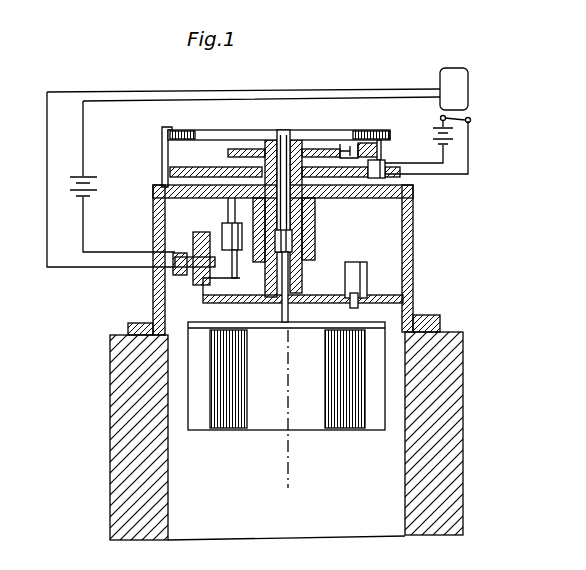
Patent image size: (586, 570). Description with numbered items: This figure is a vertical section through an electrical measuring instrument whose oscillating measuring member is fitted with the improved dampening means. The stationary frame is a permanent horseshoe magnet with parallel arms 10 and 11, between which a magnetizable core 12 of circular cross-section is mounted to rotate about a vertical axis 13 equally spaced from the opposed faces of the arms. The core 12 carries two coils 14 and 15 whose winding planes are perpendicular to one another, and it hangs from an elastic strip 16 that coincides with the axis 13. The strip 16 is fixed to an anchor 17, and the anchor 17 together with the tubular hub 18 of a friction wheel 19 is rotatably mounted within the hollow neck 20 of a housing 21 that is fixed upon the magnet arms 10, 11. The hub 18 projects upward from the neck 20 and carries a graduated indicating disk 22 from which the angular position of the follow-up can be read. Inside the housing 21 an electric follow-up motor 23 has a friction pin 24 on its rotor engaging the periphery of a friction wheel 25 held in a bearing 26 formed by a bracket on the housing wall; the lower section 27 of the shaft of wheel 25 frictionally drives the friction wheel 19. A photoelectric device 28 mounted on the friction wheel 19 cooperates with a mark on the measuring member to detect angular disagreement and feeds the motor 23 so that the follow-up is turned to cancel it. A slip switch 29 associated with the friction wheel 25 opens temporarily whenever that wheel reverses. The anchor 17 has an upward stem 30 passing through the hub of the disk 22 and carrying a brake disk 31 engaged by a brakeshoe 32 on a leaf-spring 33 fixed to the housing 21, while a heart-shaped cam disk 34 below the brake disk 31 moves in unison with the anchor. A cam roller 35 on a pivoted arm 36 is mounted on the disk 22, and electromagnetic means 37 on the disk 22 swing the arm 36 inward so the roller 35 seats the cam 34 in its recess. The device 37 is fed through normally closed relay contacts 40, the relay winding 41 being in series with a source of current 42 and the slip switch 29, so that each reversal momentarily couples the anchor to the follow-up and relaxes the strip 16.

The arm 10 is at (456, 398).
The arm 11 is at (115, 490).
The core 12 is at (279, 428).
The vertical axis 13 is at (288, 479).
The coil 14 is at (228, 428).
The coil 15 is at (344, 428).
The elastic strip 16 is at (284, 315).
The anchor 17 is at (292, 242).
The tubular hub 18 is at (302, 290).
The friction wheel 19 is at (243, 303).
The hollow neck 20 is at (313, 223).
The housing 21 is at (154, 311).
The indicating disk 22 is at (218, 174).
The electric follow-up motor 23 is at (227, 232).
The friction pin 24 is at (237, 268).
The friction wheel 25 is at (184, 273).
The bearing 26 is at (199, 233).
The lower section of shaft 27 is at (210, 286).
The photoelectric device 28 is at (365, 276).
The electrical slip switch 29 is at (181, 275).
The stem 30 is at (284, 137).
The brake disk 31 is at (215, 131).
The brakeshoe 32 is at (170, 131).
The leaf-spring 33 is at (162, 161).
The cam disk 34 is at (234, 150).
The cam roller 35 is at (342, 144).
The arm 36 is at (362, 143).
The electromagnetic means 37 is at (386, 167).
The normally closed contacts 40 is at (470, 121).
The relay winding 41 is at (468, 93).
The source of current 42 is at (88, 188).